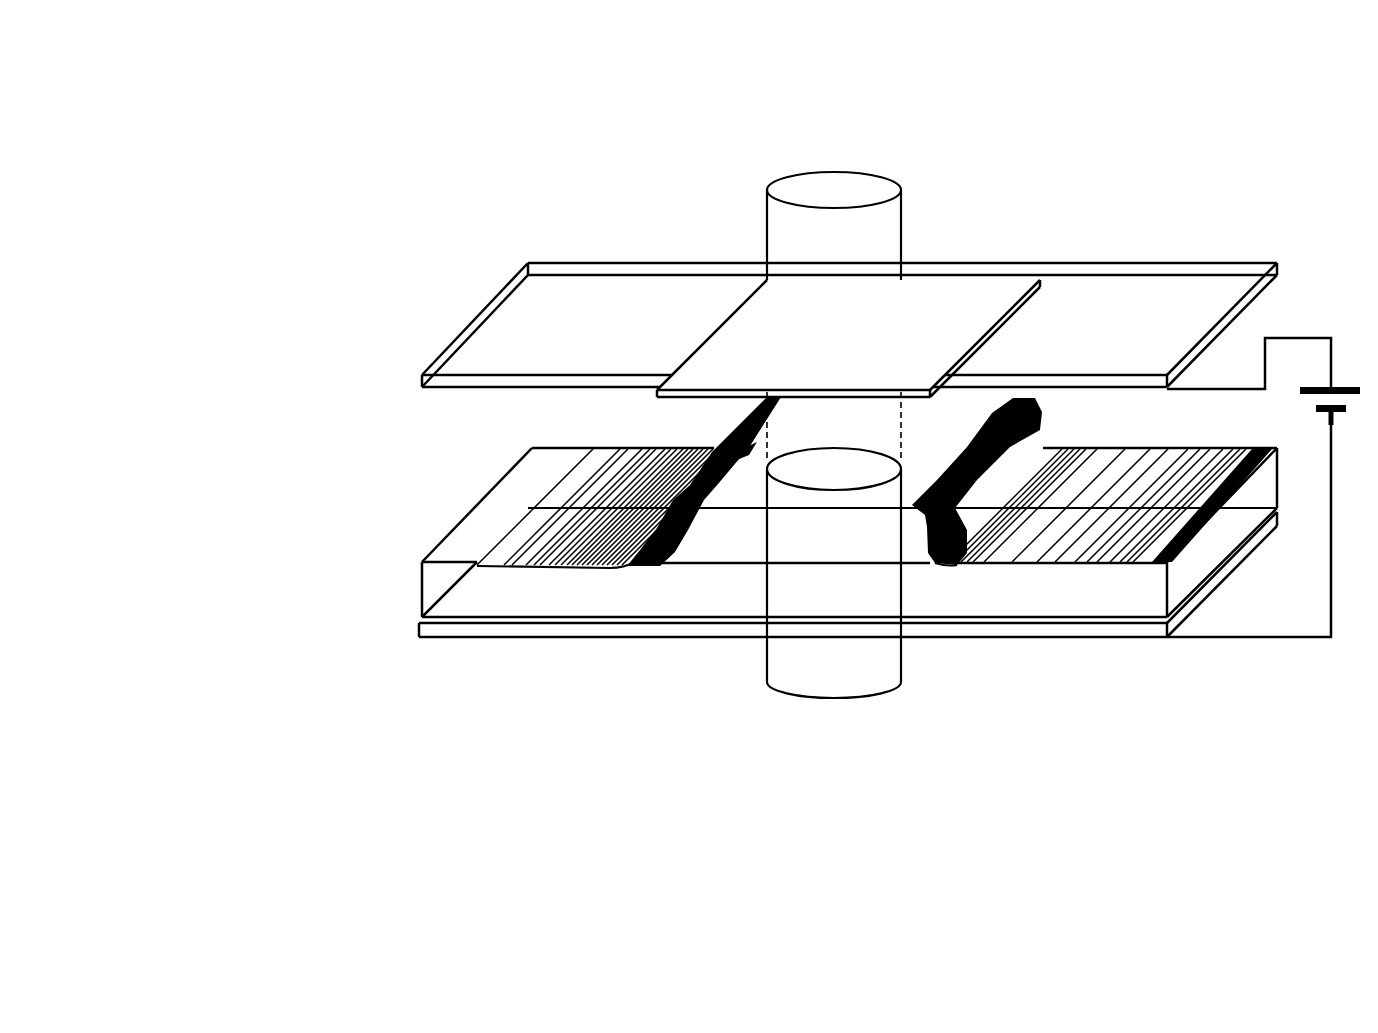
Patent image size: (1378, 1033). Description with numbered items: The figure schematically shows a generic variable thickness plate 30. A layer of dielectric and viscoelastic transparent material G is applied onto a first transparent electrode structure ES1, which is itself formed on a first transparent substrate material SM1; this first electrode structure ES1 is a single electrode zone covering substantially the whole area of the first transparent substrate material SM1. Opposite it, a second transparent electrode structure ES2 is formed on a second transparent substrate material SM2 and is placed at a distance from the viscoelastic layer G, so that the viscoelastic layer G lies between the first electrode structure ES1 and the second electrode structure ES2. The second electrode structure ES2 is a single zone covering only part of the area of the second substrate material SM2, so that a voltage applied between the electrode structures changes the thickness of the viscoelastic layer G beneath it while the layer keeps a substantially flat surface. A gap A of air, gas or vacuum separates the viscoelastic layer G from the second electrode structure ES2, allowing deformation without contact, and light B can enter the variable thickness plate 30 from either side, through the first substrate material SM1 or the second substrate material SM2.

The variable thickness plate 30 is at (478, 187).
The light B is at (832, 162).
The second transparent electrode structure ES2 is at (982, 295).
The second transparent substrate material SM2 is at (446, 381).
The gap A is at (493, 443).
The dielectric and viscoelastic transparent material G is at (483, 542).
The first transparent substrate material SM1 is at (422, 616).
The first transparent electrode structure ES1 is at (761, 582).